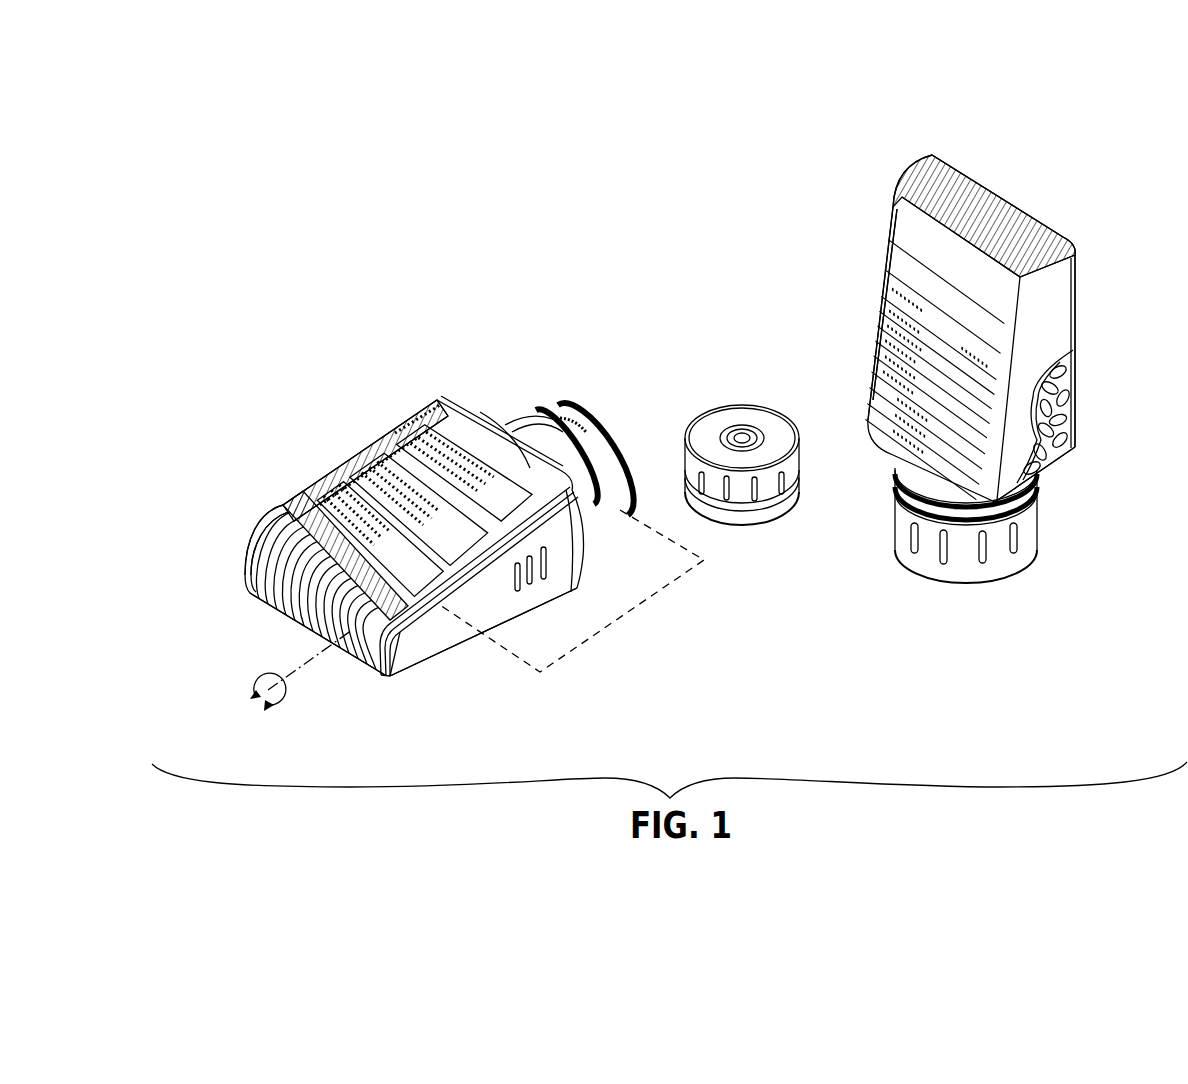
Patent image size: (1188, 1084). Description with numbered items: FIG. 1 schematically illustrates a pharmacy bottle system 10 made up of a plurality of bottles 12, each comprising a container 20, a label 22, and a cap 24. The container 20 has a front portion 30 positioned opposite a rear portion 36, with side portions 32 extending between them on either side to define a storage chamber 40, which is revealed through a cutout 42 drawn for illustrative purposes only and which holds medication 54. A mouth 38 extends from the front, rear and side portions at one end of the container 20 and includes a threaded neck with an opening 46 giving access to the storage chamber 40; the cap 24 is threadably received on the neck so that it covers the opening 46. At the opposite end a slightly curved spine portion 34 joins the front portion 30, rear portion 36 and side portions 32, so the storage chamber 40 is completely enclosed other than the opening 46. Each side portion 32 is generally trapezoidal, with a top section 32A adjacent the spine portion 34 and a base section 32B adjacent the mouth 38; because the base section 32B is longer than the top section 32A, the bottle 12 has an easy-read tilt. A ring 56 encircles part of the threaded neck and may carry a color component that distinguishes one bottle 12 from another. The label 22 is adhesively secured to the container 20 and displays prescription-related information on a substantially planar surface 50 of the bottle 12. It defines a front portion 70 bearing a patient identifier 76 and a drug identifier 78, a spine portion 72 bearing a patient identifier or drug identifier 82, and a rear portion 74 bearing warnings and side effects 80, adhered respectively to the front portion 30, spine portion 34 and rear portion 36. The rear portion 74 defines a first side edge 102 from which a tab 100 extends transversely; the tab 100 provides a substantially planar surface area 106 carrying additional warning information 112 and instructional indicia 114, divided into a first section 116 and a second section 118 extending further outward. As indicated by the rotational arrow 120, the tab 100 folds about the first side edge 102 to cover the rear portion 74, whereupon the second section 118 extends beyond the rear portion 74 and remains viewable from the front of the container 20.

The pharmacy bottle system 10 is at (217, 346).
The bottle 12 is at (423, 652).
The container 20 is at (458, 648).
The label 22 is at (260, 552).
The cap 24 is at (715, 420).
The front portion 30 is at (890, 290).
The side portions 32 is at (384, 678).
The top section 32A is at (412, 686).
The base section 32B is at (562, 562).
The spine portion 34 is at (247, 580).
The rear portion 36 is at (478, 402).
The mouth 38 is at (556, 405).
The storage chamber 40 is at (1060, 410).
The cutout 42 is at (1057, 380).
The opening 46 is at (622, 448).
The substantially planar surface 50 is at (487, 413).
The medication 54 is at (1075, 420).
The ring 56 is at (523, 422).
The front portion of label 70 is at (880, 397).
The spine portion of label 72 is at (287, 630).
The rear portion of label 74 is at (288, 518).
The patient identifier 76 is at (897, 190).
The drug identifier 78 is at (890, 247).
The warnings, side effects, etc. 80 is at (273, 524).
The patient identifier or drug identifier 82 is at (293, 622).
The tab 100 is at (372, 445).
The first side edge 102 is at (700, 556).
The substantially planar surface area 106 is at (293, 512).
The additional warning information 112 is at (366, 474).
The instructional indicia 114 is at (433, 395).
The first section 116 is at (409, 416).
The second section 118 is at (432, 402).
The rotational arrow 120 is at (288, 693).